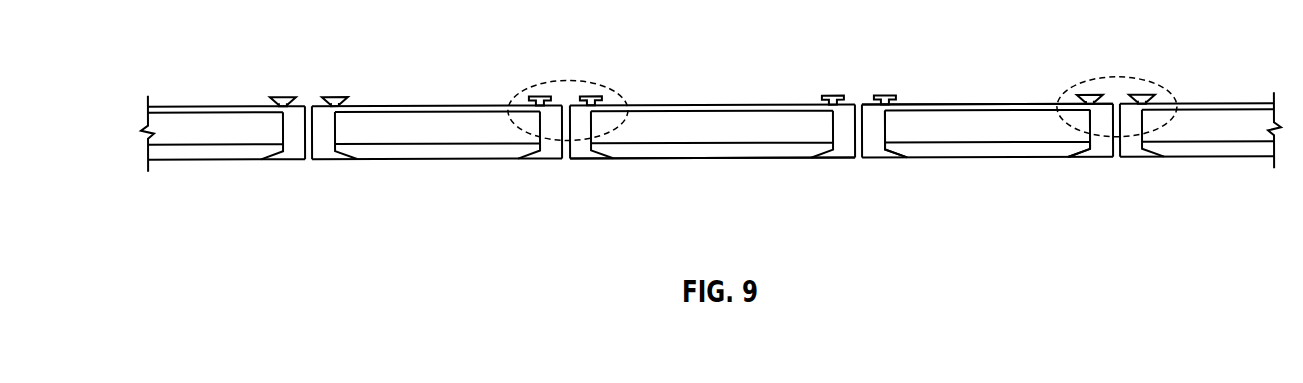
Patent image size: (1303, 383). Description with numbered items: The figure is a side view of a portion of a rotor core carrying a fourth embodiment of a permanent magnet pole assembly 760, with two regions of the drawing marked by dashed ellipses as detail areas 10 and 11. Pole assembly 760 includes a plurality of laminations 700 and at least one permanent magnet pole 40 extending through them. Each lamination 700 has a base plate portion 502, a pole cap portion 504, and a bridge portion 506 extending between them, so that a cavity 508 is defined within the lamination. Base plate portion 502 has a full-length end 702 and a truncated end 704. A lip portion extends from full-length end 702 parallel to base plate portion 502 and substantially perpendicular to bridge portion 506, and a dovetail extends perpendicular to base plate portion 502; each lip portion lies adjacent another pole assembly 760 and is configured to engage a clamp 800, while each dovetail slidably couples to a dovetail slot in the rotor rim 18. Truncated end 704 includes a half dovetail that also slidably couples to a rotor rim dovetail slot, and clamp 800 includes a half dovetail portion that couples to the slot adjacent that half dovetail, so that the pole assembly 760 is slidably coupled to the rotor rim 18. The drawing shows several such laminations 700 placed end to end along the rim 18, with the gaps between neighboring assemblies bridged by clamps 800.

The panel joint 10 is at (1118, 78).
The panel joint 11 is at (572, 80).
The rotor rim 18 is at (181, 105).
The permanent magnet pole 40 is at (366, 126).
The base plate portion 502 is at (1013, 105).
The pole cap portion 504 is at (786, 158).
The bridge portion 506 is at (890, 122).
The cavity 508 is at (1088, 148).
The laminations 700 is at (398, 161).
The full-length end 702 is at (337, 93).
The truncated end 704 is at (536, 92).
The permanent magnet pole assembly 760 is at (440, 170).
The clamp 800 is at (310, 163).